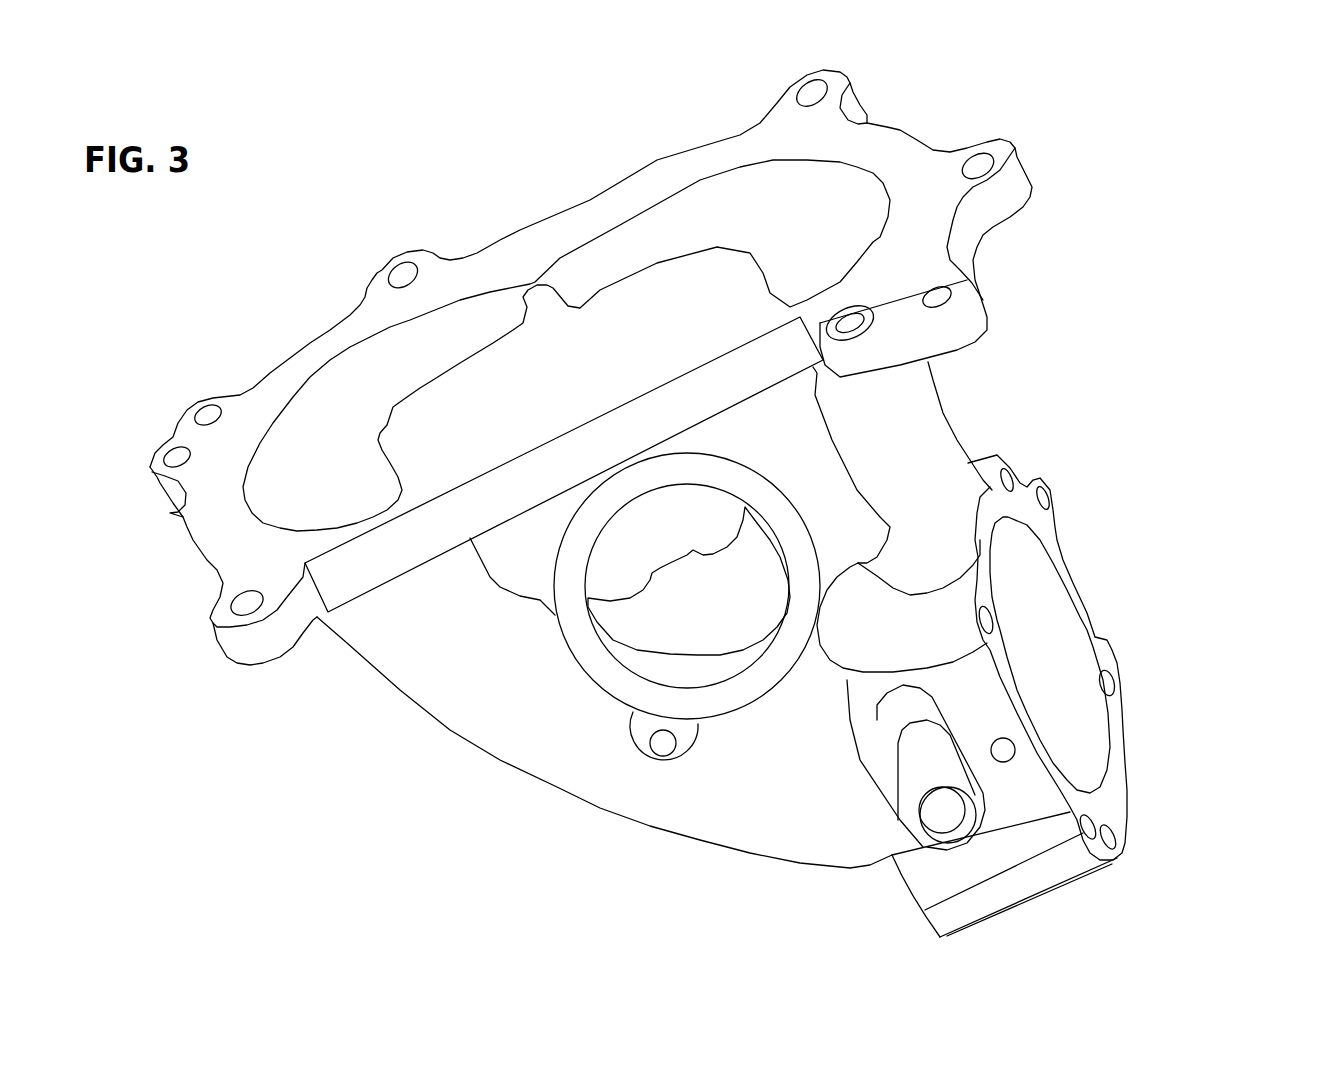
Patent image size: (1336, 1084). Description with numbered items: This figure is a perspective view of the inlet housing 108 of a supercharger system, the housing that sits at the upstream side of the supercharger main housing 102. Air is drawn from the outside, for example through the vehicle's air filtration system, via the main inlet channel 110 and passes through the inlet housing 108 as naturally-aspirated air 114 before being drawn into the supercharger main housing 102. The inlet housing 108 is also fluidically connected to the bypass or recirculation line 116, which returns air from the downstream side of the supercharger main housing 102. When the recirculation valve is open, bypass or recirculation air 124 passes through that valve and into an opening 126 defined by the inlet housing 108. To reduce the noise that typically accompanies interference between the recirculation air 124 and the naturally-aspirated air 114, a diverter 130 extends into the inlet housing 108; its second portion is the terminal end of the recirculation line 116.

The inlet housing 108 is at (1190, 281).
The naturally-aspirated air 114 is at (1148, 603).
The bypass or recirculation air 124 is at (757, 730).
The opening 126 is at (613, 653).
The diverter 130 is at (757, 543).
The supercharger main housing 102 is at (663, 247).
The bypass or recirculation line 116 is at (697, 605).
The main inlet channel 110 is at (1065, 646).